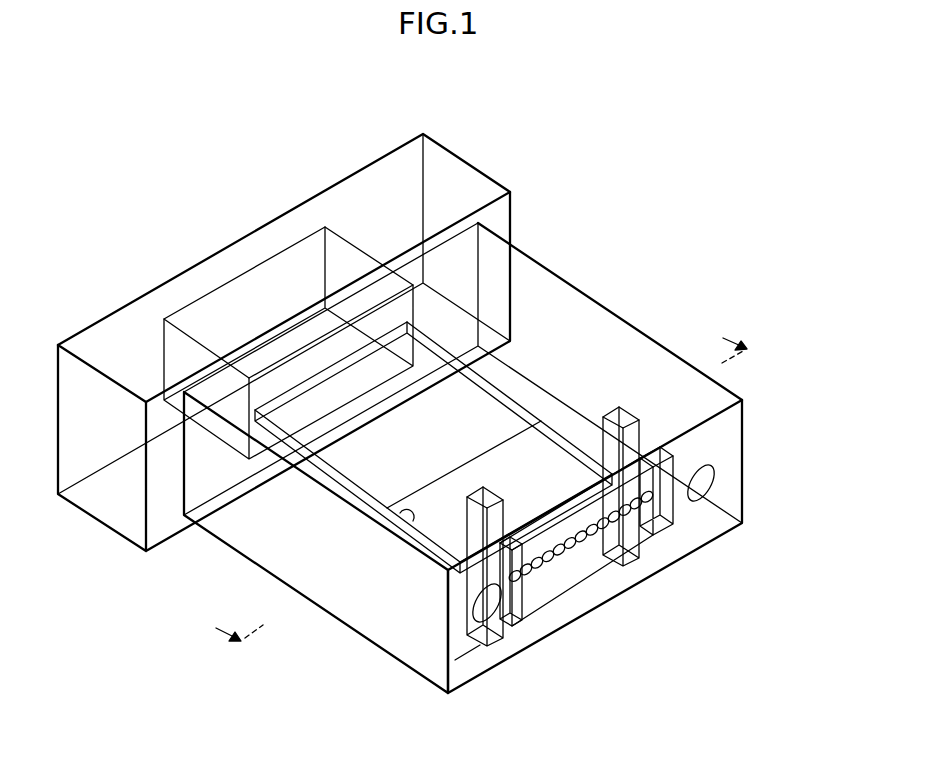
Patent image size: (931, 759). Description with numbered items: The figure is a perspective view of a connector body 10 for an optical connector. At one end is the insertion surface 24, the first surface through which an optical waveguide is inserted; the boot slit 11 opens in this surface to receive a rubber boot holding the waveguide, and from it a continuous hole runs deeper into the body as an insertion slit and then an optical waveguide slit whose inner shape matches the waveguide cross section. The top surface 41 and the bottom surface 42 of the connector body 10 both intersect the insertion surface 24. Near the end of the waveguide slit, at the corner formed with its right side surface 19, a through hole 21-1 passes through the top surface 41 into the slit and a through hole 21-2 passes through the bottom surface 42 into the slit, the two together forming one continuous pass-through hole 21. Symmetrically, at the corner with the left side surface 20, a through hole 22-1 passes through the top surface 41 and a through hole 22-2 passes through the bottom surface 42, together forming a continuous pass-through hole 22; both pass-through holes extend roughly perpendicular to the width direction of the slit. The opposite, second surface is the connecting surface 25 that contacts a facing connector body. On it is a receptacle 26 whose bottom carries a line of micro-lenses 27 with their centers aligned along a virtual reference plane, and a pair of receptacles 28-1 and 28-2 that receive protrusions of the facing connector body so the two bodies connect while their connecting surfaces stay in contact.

The connector body 10 is at (221, 143).
The boot slit 11 is at (200, 320).
The right side surface 19 is at (395, 513).
The left side surface 20 is at (544, 427).
The pass-through hole 21 is at (312, 647).
The through hole 21-1 is at (475, 540).
The through hole 21-2 is at (500, 580).
The pass-through hole 22 is at (788, 545).
The through hole 22-1 is at (633, 437).
The through hole 22-2 is at (633, 545).
The insertion surface 24 is at (368, 215).
The connecting surface 25 is at (470, 657).
The receptacle 26 is at (545, 575).
The micro-lenses 27 is at (585, 560).
The receptacle 28-1 is at (493, 605).
The receptacle 28-2 is at (708, 480).
The top surface 41 is at (528, 287).
The bottom surface 42 is at (264, 531).